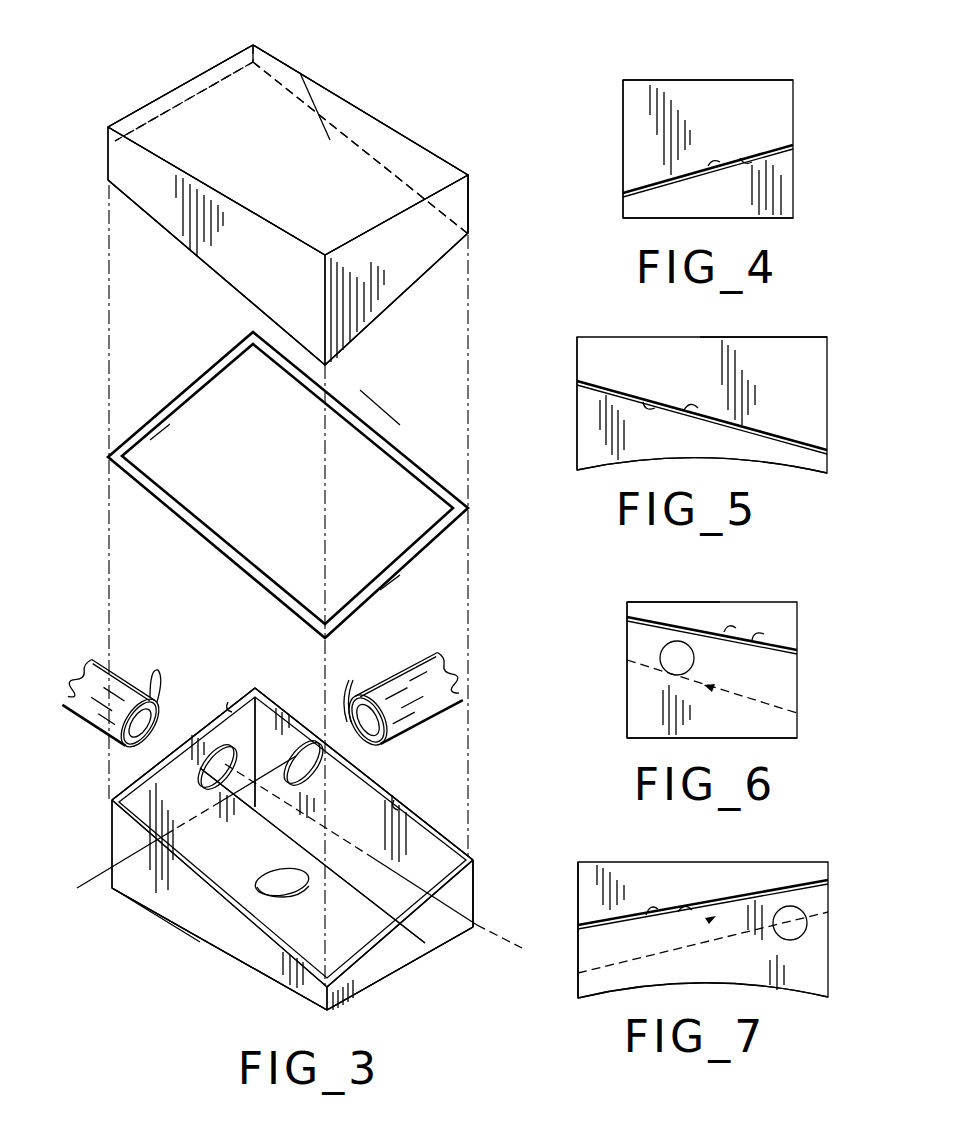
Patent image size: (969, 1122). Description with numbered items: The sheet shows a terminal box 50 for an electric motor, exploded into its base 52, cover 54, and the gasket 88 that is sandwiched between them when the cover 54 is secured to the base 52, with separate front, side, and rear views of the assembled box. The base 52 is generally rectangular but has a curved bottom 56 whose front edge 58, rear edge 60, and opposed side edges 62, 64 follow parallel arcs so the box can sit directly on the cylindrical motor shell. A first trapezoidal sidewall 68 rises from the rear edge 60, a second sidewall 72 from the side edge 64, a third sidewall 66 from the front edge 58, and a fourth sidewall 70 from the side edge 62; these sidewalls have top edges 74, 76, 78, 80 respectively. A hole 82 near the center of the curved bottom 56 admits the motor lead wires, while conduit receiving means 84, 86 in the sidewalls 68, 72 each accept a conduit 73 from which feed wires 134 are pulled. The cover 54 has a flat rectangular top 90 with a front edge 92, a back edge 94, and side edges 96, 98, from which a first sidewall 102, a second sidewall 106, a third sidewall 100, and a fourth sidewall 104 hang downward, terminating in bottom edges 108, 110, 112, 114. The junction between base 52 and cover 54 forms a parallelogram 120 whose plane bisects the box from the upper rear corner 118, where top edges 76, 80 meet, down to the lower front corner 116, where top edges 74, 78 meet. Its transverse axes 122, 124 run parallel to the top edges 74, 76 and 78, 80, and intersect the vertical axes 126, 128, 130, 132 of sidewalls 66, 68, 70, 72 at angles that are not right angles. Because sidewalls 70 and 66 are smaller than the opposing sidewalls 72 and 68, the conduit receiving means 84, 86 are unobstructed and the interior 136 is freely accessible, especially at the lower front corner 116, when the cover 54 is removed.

In FIG. 3, the terminal box 50 is at (495, 559).
In FIG. 4, the terminal box 50 is at (612, 114).
In FIG. 5, the terminal box 50 is at (555, 372).
In FIG. 6, the terminal box 50 is at (595, 640).
In FIG. 7, the terminal box 50 is at (584, 846).
In FIG. 3, the base 52 is at (481, 893).
In FIG. 3, the cover 54 is at (467, 214).
In FIG. 3, the curved bottom 56 is at (293, 923).
In FIG. 3, the front edge 58 is at (401, 970).
In FIG. 4, the front edge 58 is at (752, 218).
In FIG. 3, the rear edge 60 is at (113, 845).
In FIG. 6, the rear edge 60 is at (690, 738).
In FIG. 3, the side edge 62 is at (207, 926).
In FIG. 5, the side edge 62 is at (680, 458).
In FIG. 3, the side edge 64 is at (486, 833).
In FIG. 7, the side edge 64 is at (700, 985).
In FIG. 3, the third trapezoidal sidewall 66 is at (437, 940).
In FIG. 4, the third trapezoidal sidewall 66 is at (775, 190).
In FIG. 3, the first trapezoidal sidewall 68 is at (153, 808).
In FIG. 6, the first trapezoidal sidewall 68 is at (640, 710).
In FIG. 3, the fourth trapezoidal sidewall 70 is at (158, 908).
In FIG. 5, the fourth trapezoidal sidewall 70 is at (603, 430).
In FIG. 3, the second trapezoidal sidewall 72 is at (400, 832).
In FIG. 7, the second trapezoidal sidewall 72 is at (590, 945).
In FIG. 3, the conduit 73 is at (96, 668).
In FIG. 3, the top edge 74 is at (380, 918).
In FIG. 4, the top edge 74 is at (713, 168).
In FIG. 6, the top edge 74 is at (730, 690).
In FIG. 3, the top edge 76 is at (232, 702).
In FIG. 6, the top edge 76 is at (731, 640).
In FIG. 3, the top edge 78 is at (100, 893).
In FIG. 5, the top edge 78 is at (688, 412).
In FIG. 7, the top edge 78 is at (716, 918).
In FIG. 3, the top edge 80 is at (397, 798).
In FIG. 7, the top edge 80 is at (652, 914).
In FIG. 3, the hole 82 is at (273, 893).
In FIG. 3, the conduit receiving means 84 is at (213, 742).
In FIG. 6, the conduit receiving means 84 is at (660, 655).
In FIG. 3, the conduit receiving means 86 is at (300, 740).
In FIG. 7, the conduit receiving means 86 is at (800, 928).
In FIG. 3, the gasket 88 is at (386, 422).
In FIG. 4, the gasket 88 is at (795, 145).
In FIG. 5, the gasket 88 is at (827, 450).
In FIG. 6, the gasket 88 is at (797, 650).
In FIG. 7, the gasket 88 is at (828, 880).
In FIG. 3, the flat rectangular top 90 is at (322, 153).
In FIG. 3, the front edge 92 is at (455, 192).
In FIG. 4, the front edge 92 is at (700, 80).
In FIG. 3, the back edge 94 is at (175, 95).
In FIG. 6, the back edge 94 is at (730, 602).
In FIG. 3, the side edge 96 is at (170, 160).
In FIG. 5, the side edge 96 is at (750, 337).
In FIG. 3, the side edge 98 is at (301, 74).
In FIG. 7, the side edge 98 is at (740, 862).
In FIG. 3, the third trapezoidal sidewall 100 is at (430, 240).
In FIG. 4, the third trapezoidal sidewall 100 is at (773, 108).
In FIG. 3, the first trapezoidal sidewall 102 is at (146, 146).
In FIG. 6, the first trapezoidal sidewall 102 is at (712, 615).
In FIG. 3, the fourth trapezoidal sidewall 104 is at (173, 208).
In FIG. 5, the fourth trapezoidal sidewall 104 is at (610, 355).
In FIG. 3, the second trapezoidal sidewall 106 is at (388, 148).
In FIG. 3, the bottom edge 108 is at (430, 278).
In FIG. 4, the bottom edge 108 is at (748, 160).
In FIG. 3, the bottom edge 110 is at (199, 93).
In FIG. 6, the bottom edge 110 is at (758, 642).
In FIG. 3, the bottom edge 112 is at (190, 250).
In FIG. 5, the bottom edge 112 is at (657, 403).
In FIG. 3, the bottom edge 114 is at (330, 140).
In FIG. 7, the bottom edge 114 is at (680, 910).
In FIG. 3, the lower front corner 116 is at (320, 1008).
In FIG. 3, the upper rear corner 118 is at (262, 686).
In FIG. 3, the parallelogram 120 is at (228, 284).
In FIG. 3, the transverse axis 122 is at (284, 838).
In FIG. 3, the transverse axis 124 is at (433, 931).
In FIG. 3, the vertical axis 126 is at (407, 984).
In FIG. 3, the vertical axis 128 is at (185, 722).
In FIG. 3, the vertical axis 130 is at (217, 884).
In FIG. 3, the vertical axis 132 is at (378, 770).
In FIG. 3, the feed wires 134 is at (153, 690).
In FIG. 3, the interior 136 is at (346, 912).